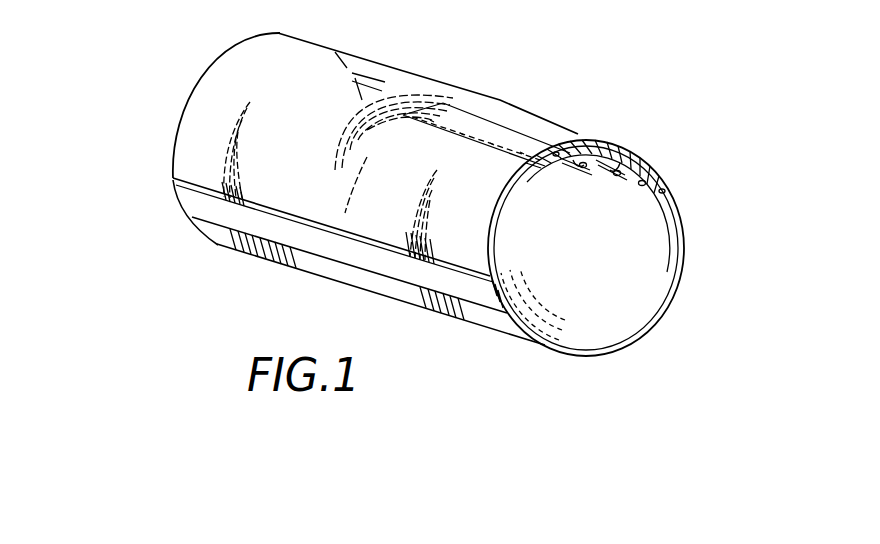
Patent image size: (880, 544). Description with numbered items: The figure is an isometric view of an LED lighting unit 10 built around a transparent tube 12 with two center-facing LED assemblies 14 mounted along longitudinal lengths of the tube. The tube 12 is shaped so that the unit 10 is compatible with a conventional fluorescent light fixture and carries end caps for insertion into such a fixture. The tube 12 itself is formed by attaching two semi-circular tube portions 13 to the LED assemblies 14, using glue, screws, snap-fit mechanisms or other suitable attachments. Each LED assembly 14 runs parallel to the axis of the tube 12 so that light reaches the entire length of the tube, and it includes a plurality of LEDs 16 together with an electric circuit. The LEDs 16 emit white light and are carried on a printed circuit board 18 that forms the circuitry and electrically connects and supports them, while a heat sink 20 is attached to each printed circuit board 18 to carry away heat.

The LED lighting unit 10 is at (162, 74).
The tube 12 is at (323, 32).
The semi-circular tube portions 13 is at (410, 72).
The LED assembly 14 is at (637, 155).
The LEDs 16 is at (620, 163).
The printed circuit board 18 is at (627, 178).
The heat sink 20 is at (550, 175).